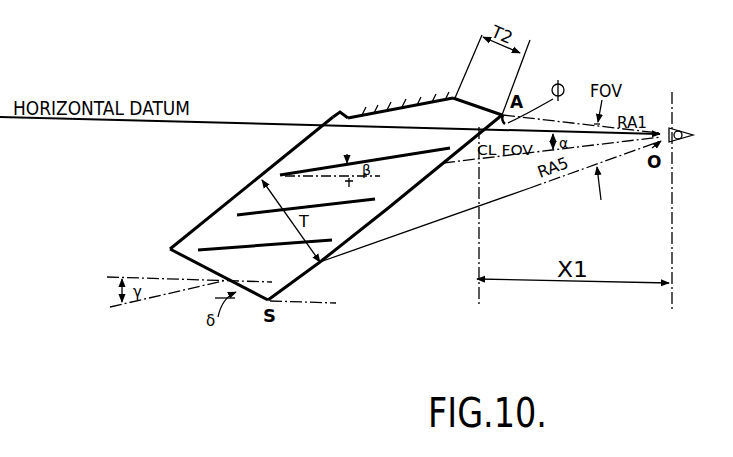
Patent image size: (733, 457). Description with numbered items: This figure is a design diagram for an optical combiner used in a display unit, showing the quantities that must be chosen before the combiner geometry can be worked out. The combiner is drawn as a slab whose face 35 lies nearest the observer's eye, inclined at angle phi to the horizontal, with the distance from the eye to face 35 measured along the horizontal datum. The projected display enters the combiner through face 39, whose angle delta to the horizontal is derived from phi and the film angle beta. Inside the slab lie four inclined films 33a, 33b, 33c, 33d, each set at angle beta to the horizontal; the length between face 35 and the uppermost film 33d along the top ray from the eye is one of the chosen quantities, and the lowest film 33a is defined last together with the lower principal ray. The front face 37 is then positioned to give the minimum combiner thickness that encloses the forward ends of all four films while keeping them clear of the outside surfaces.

The film 33a is at (228, 246).
The film 33b is at (355, 192).
The film 33c is at (333, 154).
The film 33d is at (387, 110).
The face 35 is at (389, 209).
The front face 37 is at (238, 195).
The face 39 is at (172, 263).